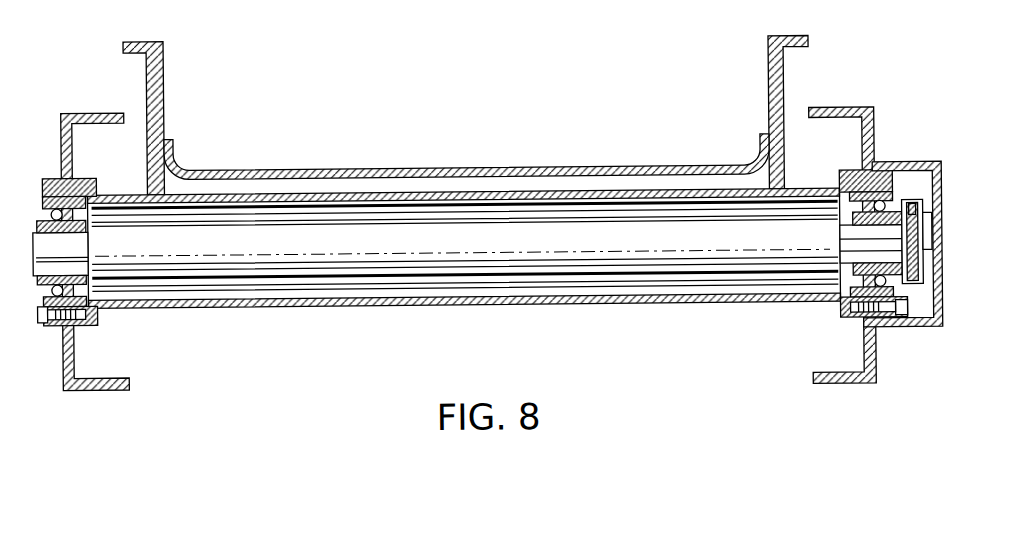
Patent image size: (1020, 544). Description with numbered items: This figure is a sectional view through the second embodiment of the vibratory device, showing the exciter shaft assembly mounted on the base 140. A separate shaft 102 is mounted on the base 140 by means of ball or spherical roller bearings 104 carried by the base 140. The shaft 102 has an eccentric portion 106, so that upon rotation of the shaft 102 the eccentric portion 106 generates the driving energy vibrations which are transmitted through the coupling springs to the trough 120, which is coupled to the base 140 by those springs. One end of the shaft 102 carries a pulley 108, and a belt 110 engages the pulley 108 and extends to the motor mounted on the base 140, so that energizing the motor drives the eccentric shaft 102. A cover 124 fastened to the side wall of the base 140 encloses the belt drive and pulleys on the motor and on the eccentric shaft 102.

The shaft 102 is at (343, 247).
The ball or spherical roller bearings 104 is at (71, 178).
The eccentric portion 106 is at (620, 285).
The pulley 108 is at (902, 246).
The belt 110 is at (912, 207).
The trough 120 is at (400, 174).
The cover 124 is at (917, 335).
The base 140 is at (872, 137).